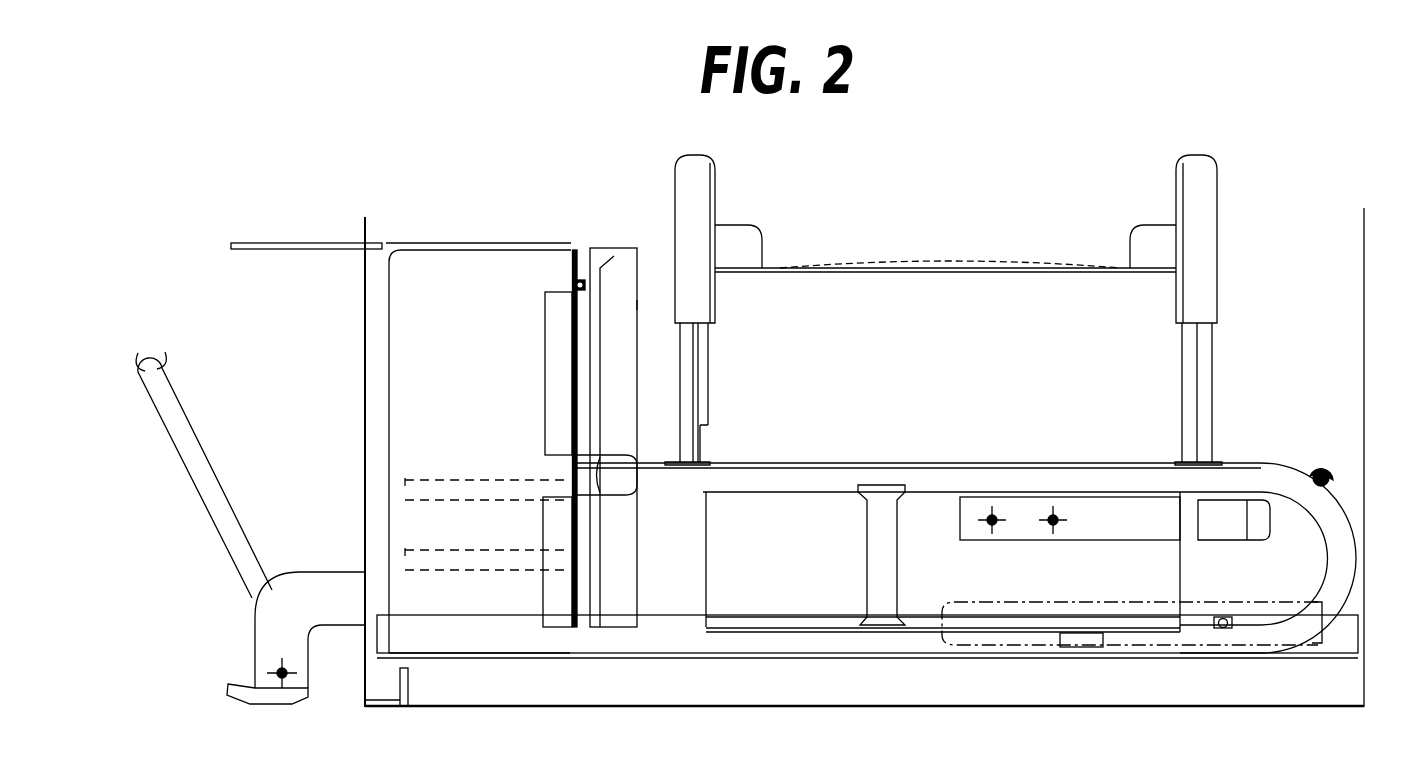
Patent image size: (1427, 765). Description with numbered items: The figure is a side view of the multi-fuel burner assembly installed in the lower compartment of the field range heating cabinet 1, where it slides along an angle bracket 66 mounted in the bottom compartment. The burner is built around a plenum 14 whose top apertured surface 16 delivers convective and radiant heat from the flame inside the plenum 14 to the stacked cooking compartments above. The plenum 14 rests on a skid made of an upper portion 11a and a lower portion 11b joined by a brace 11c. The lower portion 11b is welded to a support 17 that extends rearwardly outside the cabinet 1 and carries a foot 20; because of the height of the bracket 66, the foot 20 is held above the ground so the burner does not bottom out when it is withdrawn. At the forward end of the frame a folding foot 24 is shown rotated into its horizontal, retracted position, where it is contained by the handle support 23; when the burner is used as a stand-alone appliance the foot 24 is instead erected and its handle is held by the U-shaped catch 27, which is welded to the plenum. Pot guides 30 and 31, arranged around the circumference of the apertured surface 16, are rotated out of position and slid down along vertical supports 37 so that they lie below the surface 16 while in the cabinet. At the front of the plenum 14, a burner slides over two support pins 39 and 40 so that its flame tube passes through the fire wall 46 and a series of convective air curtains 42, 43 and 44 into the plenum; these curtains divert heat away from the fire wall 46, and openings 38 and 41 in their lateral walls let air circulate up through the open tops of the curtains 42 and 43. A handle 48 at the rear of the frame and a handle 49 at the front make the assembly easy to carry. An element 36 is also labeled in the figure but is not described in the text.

The heating cabinet 1 is at (1365, 352).
The upper portion of skid 11a is at (1252, 470).
The lower portion of skid 11b is at (818, 645).
The brace 11c is at (865, 578).
The plenum 14 is at (976, 384).
The top apertured surface 16 is at (978, 265).
The support 17 is at (305, 575).
The foot 20 is at (238, 682).
The handle support 23 is at (1073, 647).
The folding foot 24 is at (1055, 605).
The catch 27 is at (1218, 520).
The pot guide 30 is at (690, 183).
The pot guide 31 is at (1205, 181).
The cabinet side wall 36 is at (365, 292).
The vertical supports 37 is at (678, 395).
The opening 38 is at (612, 493).
The support pin 39 is at (470, 478).
The support pin 40 is at (470, 548).
The opening 41 is at (570, 462).
The first convective air curtain 42 is at (598, 262).
The second convective air curtain 43 is at (618, 245).
The convective air curtain 44 is at (653, 275).
The fire wall 46 is at (572, 277).
The handle 48 is at (200, 445).
The handle 49 is at (1338, 468).
The angle bracket 66 is at (517, 657).